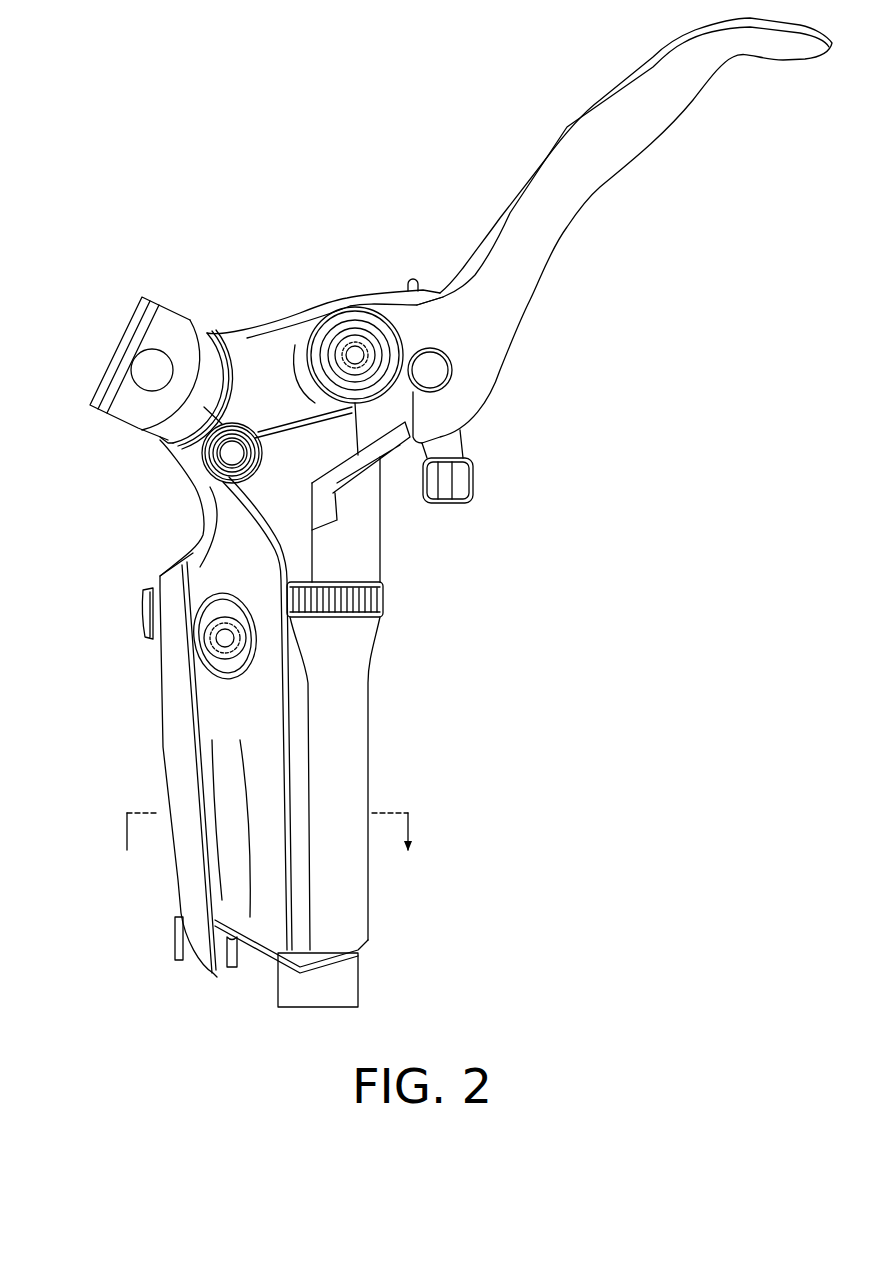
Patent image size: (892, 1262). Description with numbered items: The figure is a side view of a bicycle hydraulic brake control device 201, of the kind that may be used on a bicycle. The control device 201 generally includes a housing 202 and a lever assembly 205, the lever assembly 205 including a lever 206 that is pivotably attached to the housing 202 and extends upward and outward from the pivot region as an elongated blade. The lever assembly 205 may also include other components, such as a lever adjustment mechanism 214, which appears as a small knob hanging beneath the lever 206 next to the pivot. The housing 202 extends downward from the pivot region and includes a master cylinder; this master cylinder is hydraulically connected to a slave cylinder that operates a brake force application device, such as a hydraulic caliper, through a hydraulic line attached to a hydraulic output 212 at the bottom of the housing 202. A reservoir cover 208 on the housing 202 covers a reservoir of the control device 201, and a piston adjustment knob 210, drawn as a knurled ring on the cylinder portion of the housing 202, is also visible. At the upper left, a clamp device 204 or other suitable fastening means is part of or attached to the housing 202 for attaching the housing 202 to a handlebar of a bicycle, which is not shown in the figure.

The bicycle hydraulic brake control device 201 is at (203, 130).
The housing 202 is at (173, 522).
The clamp device 204 is at (167, 333).
The lever assembly 205 is at (382, 233).
The lever 206 is at (525, 227).
The reservoir cover 208 is at (173, 747).
The piston adjustment knob 210 is at (375, 598).
The hydraulic output 212 is at (320, 1007).
The lever adjustment mechanism 214 is at (477, 450).